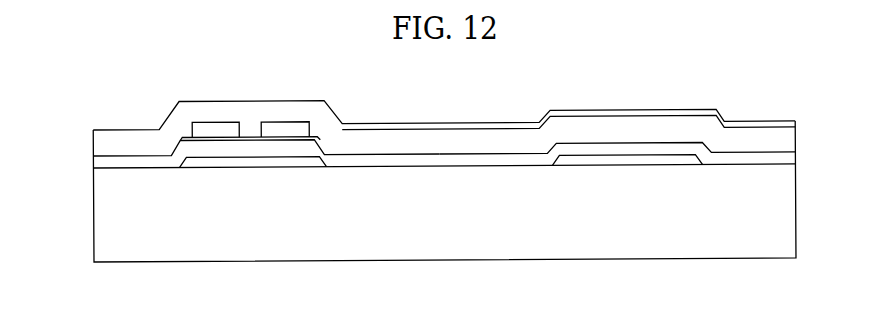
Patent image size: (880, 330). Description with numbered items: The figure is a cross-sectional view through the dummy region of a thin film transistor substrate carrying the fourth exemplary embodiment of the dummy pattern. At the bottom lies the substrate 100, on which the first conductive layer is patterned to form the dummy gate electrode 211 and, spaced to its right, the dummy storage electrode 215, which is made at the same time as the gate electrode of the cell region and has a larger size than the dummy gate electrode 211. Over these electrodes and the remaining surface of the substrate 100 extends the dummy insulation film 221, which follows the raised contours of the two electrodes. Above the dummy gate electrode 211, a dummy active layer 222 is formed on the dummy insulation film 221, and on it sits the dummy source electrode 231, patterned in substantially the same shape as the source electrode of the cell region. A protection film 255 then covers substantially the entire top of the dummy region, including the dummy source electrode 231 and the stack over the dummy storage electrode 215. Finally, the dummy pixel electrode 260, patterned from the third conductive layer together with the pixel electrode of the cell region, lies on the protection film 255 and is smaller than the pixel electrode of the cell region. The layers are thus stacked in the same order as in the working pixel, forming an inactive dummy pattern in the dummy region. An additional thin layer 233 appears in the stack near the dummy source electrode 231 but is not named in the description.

The substrate 100 is at (796, 234).
The dummy gate electrode 211 is at (253, 163).
The dummy storage electrode 215 is at (641, 163).
The dummy insulation film 221 is at (796, 167).
The dummy active layer 222 is at (178, 147).
The dummy source electrode 231 is at (200, 127).
The gate electrode 233 is at (197, 140).
The protection film 255 is at (796, 150).
The dummy pixel electrode 260 is at (796, 128).